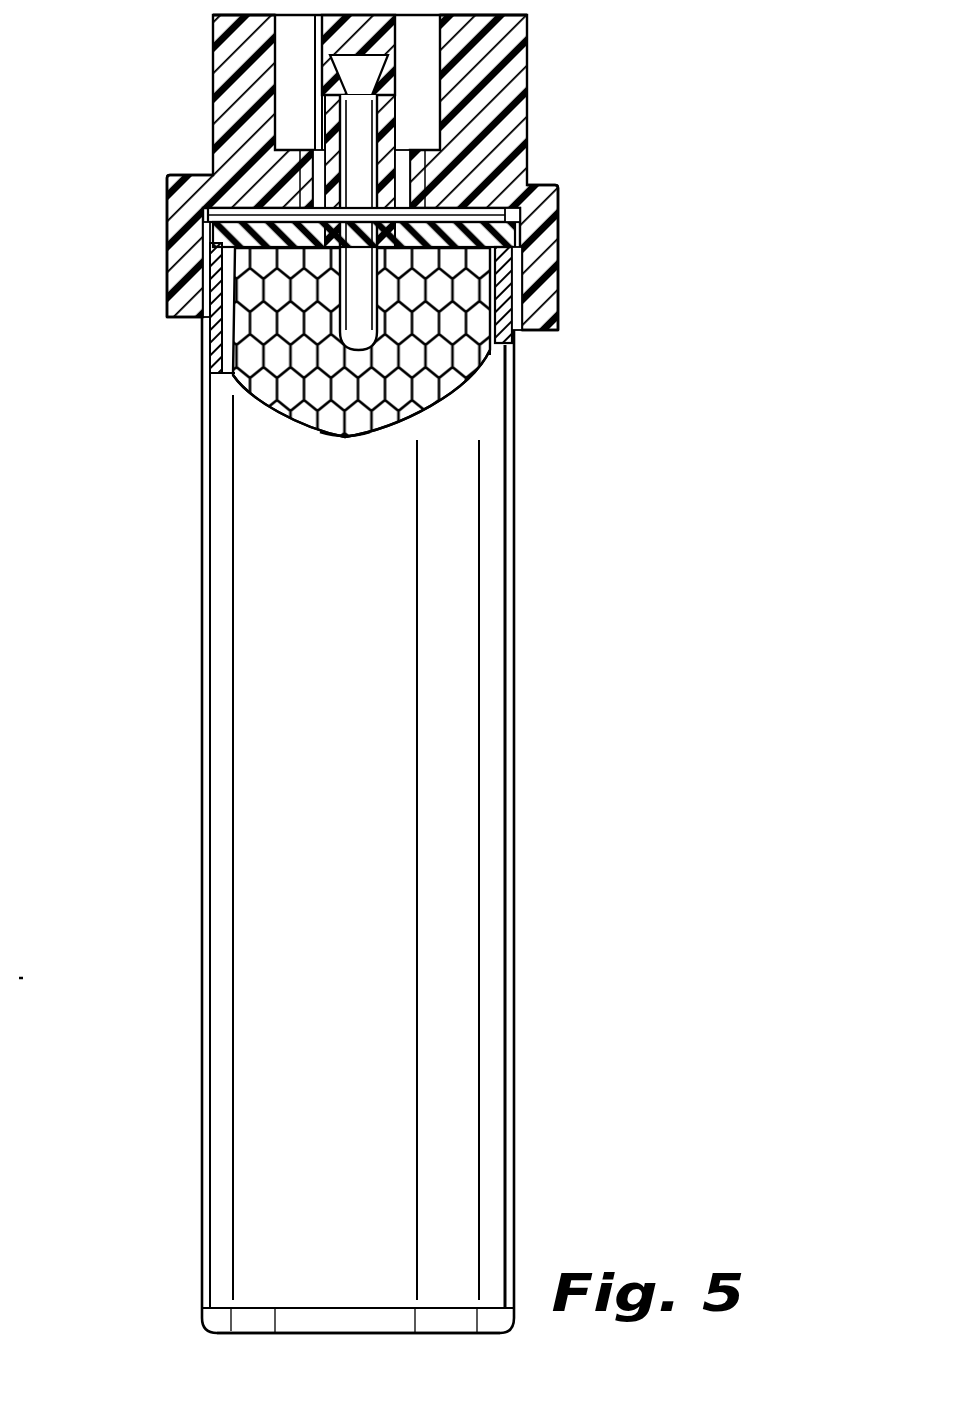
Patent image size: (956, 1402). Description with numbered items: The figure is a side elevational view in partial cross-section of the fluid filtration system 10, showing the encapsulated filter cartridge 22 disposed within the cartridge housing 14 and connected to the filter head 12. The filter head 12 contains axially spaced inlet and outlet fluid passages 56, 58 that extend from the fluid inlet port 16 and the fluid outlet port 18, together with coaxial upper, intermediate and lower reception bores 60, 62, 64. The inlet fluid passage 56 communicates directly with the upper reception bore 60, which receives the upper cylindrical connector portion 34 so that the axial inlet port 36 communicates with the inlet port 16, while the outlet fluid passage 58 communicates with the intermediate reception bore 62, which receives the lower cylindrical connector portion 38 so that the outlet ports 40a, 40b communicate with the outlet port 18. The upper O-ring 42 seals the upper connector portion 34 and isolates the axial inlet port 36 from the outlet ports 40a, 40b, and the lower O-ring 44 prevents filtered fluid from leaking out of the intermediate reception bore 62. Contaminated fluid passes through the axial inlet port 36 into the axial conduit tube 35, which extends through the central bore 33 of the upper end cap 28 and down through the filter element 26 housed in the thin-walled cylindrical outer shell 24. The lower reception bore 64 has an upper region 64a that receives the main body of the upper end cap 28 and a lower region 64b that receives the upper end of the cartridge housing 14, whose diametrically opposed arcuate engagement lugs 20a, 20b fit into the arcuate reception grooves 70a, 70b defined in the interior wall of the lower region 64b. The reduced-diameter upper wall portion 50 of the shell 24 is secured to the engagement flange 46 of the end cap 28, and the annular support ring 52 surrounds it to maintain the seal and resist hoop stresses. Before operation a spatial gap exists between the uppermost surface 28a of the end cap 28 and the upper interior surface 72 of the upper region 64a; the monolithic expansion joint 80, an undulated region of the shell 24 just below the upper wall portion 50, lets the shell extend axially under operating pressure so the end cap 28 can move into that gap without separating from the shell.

The fluid filtration system 10 is at (165, 558).
The filter head 12 is at (608, 118).
The cartridge housing 14 is at (203, 479).
The fluid inlet port 16 is at (440, 38).
The fluid outlet port 18 is at (284, 43).
The arcuate engagement lug 20a is at (197, 300).
The arcuate engagement lug 20b is at (525, 280).
The encapsulated filter cartridge 22 is at (403, 426).
The cylindrical outer shell 24 is at (215, 368).
The filter element 26 is at (492, 332).
The upper end cap 28 is at (200, 245).
The uppermost surface of end cap 28a is at (512, 170).
The central bore 33 is at (290, 405).
The upper cylindrical connector portion 34 is at (285, 118).
The axial conduit tube 35 is at (346, 440).
The axial inlet port 36 is at (359, 188).
The lower cylindrical connector portion 38 is at (165, 190).
The outlet port 40a is at (318, 150).
The outlet port 40b is at (440, 142).
The upper O-ring 42 is at (432, 85).
The lower O-ring 44 is at (455, 175).
The engagement flange 46 is at (486, 336).
The upper wall portion 50 is at (226, 380).
The annular support ring 52 is at (215, 340).
The inlet fluid passage 56 is at (432, 60).
The outlet fluid passage 58 is at (242, 30).
The upper reception bore 60 is at (430, 120).
The intermediate reception bore 62 is at (305, 170).
The lower reception bore 64 is at (235, 238).
The upper region of lower reception bore 64a is at (505, 222).
The lower region of lower reception bore 64b is at (508, 265).
The arcuate reception groove 70a is at (210, 310).
The arcuate reception groove 70b is at (515, 320).
The upper interior surface 72 is at (558, 191).
The expansion joint 80 is at (515, 345).